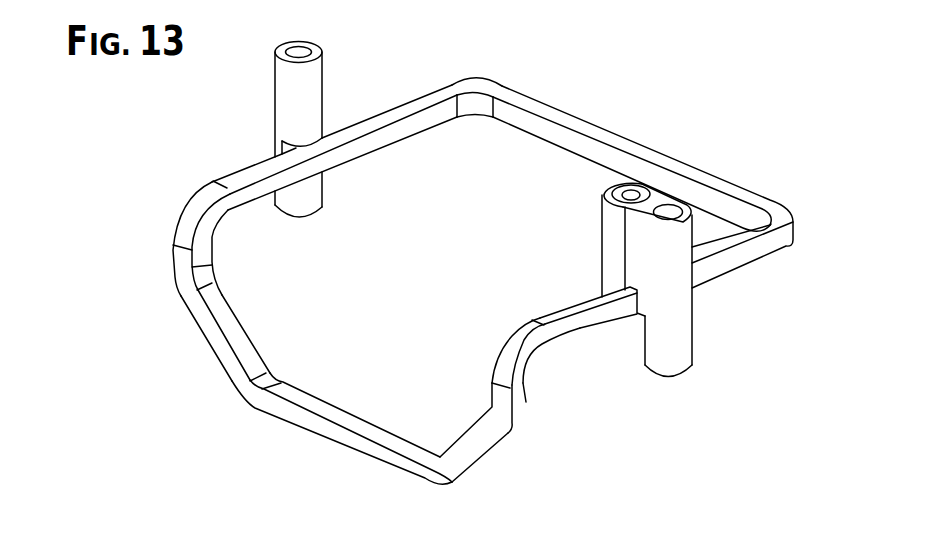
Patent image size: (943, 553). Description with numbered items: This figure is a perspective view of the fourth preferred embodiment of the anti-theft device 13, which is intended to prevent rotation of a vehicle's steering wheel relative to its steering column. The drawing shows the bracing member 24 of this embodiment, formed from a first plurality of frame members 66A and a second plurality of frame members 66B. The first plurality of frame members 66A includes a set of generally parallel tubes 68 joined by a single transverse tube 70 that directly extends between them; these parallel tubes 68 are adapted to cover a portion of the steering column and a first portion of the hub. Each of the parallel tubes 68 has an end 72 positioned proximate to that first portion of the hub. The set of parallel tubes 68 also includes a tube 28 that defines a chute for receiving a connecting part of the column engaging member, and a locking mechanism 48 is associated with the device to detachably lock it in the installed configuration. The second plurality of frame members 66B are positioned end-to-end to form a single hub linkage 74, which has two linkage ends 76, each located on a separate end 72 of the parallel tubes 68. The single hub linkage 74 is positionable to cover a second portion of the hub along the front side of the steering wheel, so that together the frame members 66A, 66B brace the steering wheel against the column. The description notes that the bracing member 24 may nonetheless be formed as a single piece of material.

The anti-theft device 13 is at (706, 139).
The bracing member 24 is at (556, 376).
The tube 28 is at (315, 82).
The locking mechanism 48 is at (628, 193).
The first plurality of frame members 66A is at (412, 105).
The second plurality of frame members 66B is at (293, 397).
The generally parallel tubes 68 is at (403, 135).
The single transverse tube 70 is at (648, 148).
The end 72 is at (227, 186).
The single hub linkage 74 is at (320, 432).
The linkage ends 76 is at (188, 200).